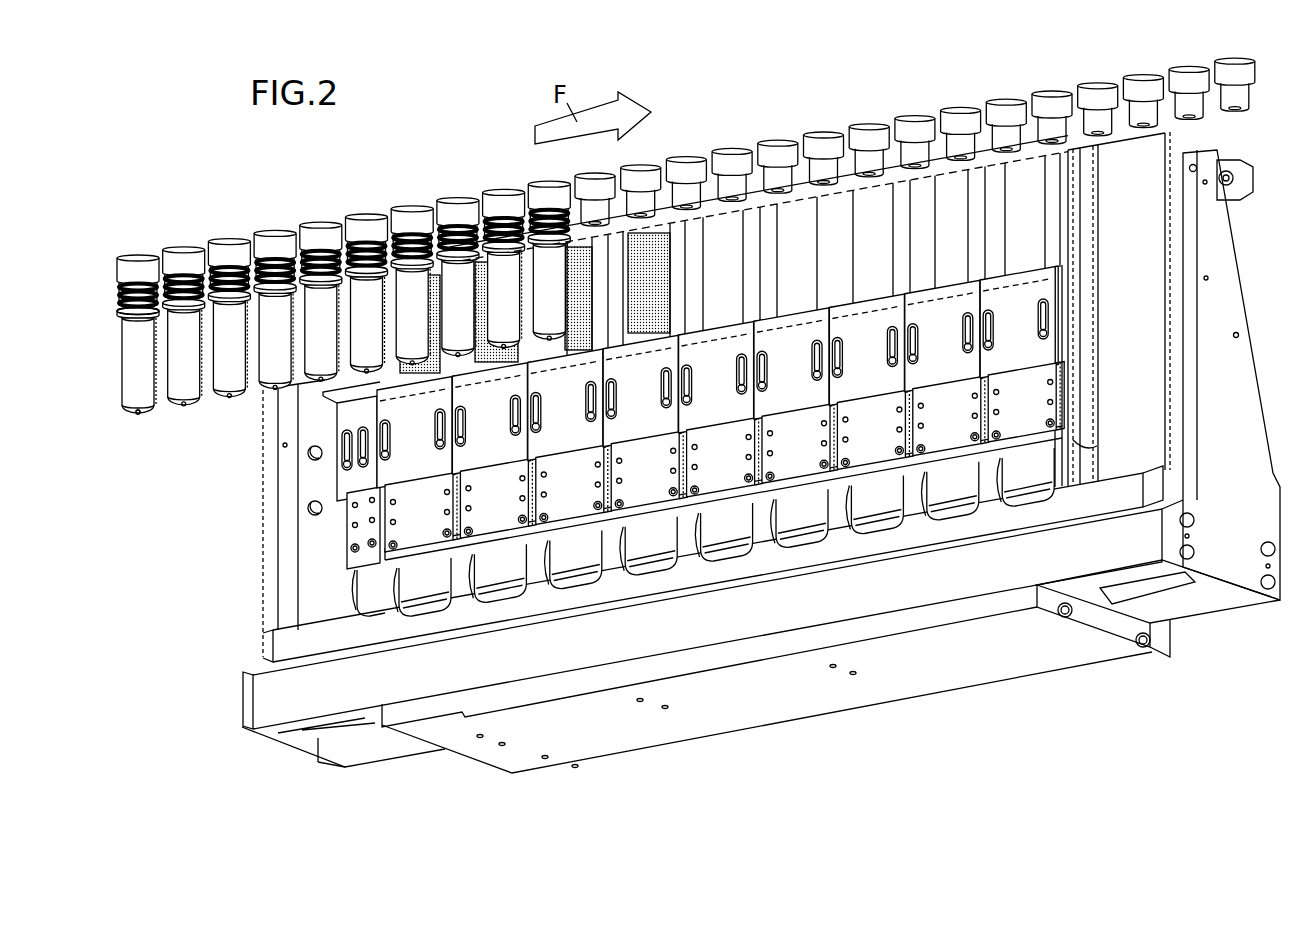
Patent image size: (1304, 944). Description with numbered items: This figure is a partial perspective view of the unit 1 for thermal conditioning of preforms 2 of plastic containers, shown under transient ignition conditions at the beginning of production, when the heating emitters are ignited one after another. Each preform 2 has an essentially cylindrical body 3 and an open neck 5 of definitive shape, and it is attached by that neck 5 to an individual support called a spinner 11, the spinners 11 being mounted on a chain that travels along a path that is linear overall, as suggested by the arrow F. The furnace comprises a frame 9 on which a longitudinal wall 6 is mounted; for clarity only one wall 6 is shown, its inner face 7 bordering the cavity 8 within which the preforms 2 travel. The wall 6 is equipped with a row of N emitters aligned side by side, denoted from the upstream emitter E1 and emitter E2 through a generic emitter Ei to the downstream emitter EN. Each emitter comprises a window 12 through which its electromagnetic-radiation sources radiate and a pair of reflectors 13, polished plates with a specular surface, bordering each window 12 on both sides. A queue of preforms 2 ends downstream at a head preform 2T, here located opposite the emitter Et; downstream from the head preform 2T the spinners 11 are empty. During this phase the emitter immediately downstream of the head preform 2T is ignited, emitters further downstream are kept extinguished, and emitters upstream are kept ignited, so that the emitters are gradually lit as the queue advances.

The unit for thermal conditioning 1 is at (968, 73).
The preform 2 is at (328, 306).
The head preform 2T is at (566, 298).
The body 3 is at (130, 345).
The neck 5 is at (120, 297).
The longitudinal wall 6 is at (262, 431).
The inner face 7 is at (750, 262).
The cavity 8 is at (1022, 217).
The frame 9 is at (1245, 410).
The spinner 11 is at (867, 130).
The window 12 is at (661, 297).
The reflector 13 is at (750, 240).
The emitter E1 is at (420, 373).
The emitter E2 is at (495, 363).
The emitter Et is at (572, 350).
The emitter Ei is at (792, 298).
The emitter EN is at (952, 267).